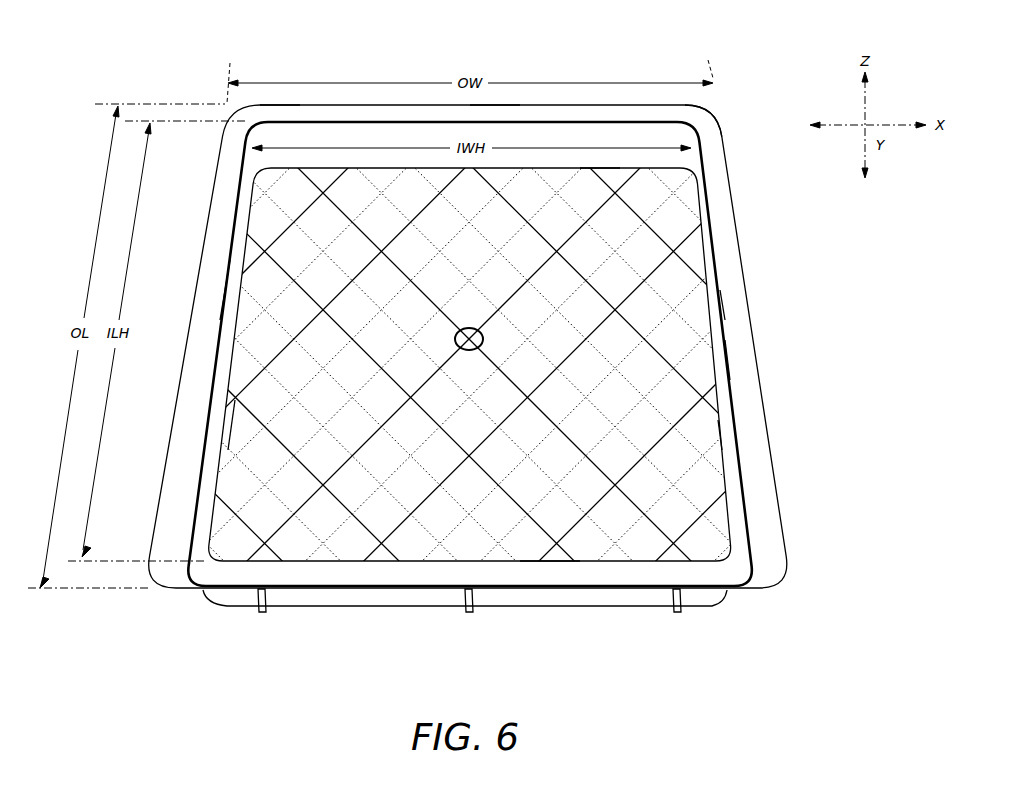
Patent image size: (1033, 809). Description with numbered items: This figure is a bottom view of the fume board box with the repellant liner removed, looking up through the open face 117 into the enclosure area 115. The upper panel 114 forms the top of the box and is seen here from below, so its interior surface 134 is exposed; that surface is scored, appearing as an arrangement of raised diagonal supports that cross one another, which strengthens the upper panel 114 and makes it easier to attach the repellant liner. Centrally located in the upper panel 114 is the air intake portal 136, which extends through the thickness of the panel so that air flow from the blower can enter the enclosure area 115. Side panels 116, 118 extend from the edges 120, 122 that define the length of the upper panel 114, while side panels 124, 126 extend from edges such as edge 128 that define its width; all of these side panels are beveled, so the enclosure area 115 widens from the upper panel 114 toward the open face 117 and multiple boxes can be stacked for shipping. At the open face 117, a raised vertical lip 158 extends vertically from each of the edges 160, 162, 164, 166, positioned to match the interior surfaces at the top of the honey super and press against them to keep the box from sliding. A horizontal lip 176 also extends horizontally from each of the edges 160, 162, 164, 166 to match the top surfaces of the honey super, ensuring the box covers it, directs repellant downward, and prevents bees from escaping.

The upper panel 114 is at (516, 311).
The enclosure area 115 is at (700, 230).
The side panel 116 is at (222, 366).
The open face 117 is at (539, 140).
The side panel 118 is at (725, 362).
The edge 120 is at (217, 425).
The edge 122 is at (717, 437).
The side panel 124 is at (643, 137).
The side panel 126 is at (643, 563).
The edge 128 is at (603, 167).
The interior surface 134 is at (647, 480).
The air intake portal 136 is at (483, 335).
The raised vertical lip 158 is at (493, 112).
The edge 160 is at (720, 302).
The edge 162 is at (557, 563).
The edge 164 is at (222, 300).
The edge 166 is at (317, 110).
The horizontal lip 176 is at (705, 122).